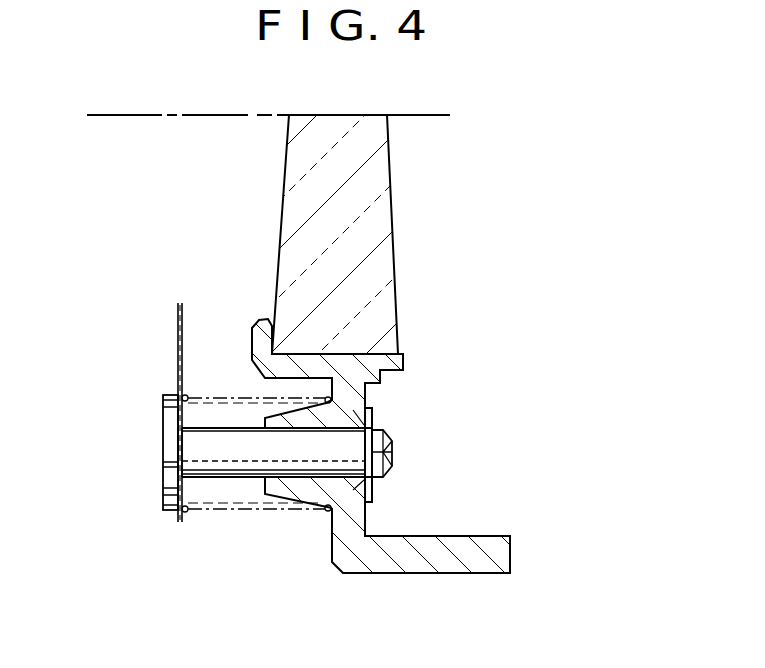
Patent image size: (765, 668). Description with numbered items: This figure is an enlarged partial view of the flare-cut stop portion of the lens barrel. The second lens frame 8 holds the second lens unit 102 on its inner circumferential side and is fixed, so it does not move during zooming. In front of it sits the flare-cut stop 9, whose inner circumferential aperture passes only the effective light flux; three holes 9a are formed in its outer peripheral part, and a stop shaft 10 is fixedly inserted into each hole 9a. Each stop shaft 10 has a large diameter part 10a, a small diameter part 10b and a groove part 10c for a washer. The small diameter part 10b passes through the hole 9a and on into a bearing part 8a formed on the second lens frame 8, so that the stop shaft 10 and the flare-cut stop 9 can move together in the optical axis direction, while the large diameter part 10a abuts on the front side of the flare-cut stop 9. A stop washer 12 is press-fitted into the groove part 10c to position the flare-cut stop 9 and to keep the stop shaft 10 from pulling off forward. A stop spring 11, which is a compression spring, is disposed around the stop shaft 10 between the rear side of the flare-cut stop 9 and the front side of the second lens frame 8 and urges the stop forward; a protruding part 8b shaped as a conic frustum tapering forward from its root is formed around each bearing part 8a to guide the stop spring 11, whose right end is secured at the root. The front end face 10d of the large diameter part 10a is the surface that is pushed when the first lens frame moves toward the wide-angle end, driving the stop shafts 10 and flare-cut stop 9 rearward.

The second lens unit 102 is at (382, 213).
The second lens frame 8 is at (465, 547).
The bearing part 8a is at (265, 443).
The protruding part 8b is at (285, 485).
The flare-cut stop 9 is at (178, 322).
The hole 9a is at (166, 470).
The stop shaft 10 is at (141, 428).
The large diameter part 10a is at (167, 495).
The small diameter part 10b is at (207, 463).
The groove part 10c is at (395, 452).
The front end face 10d is at (163, 413).
The stop spring 11 is at (248, 510).
The stop washer 12 is at (378, 420).